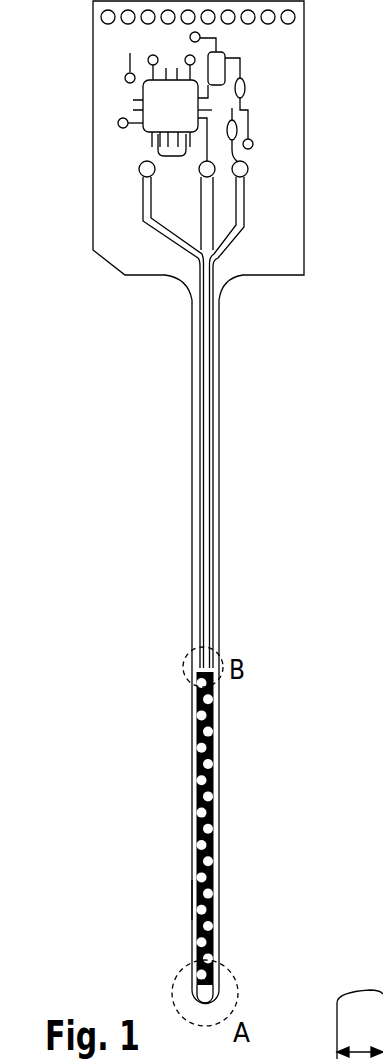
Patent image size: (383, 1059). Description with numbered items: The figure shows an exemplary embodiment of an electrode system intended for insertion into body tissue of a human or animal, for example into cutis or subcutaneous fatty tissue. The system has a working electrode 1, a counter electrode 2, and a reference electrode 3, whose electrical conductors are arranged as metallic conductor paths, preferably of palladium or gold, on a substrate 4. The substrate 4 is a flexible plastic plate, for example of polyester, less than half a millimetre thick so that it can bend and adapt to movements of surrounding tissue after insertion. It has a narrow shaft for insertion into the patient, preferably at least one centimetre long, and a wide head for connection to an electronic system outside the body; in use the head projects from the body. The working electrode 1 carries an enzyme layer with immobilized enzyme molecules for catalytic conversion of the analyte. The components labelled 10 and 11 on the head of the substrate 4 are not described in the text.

The working electrode 1 is at (192, 900).
The counter electrode 2 is at (218, 790).
The reference electrode 3 is at (190, 680).
The substrate 4 is at (268, 243).
The integrated circuit chip 10 is at (158, 120).
The electronic component 11 is at (218, 70).